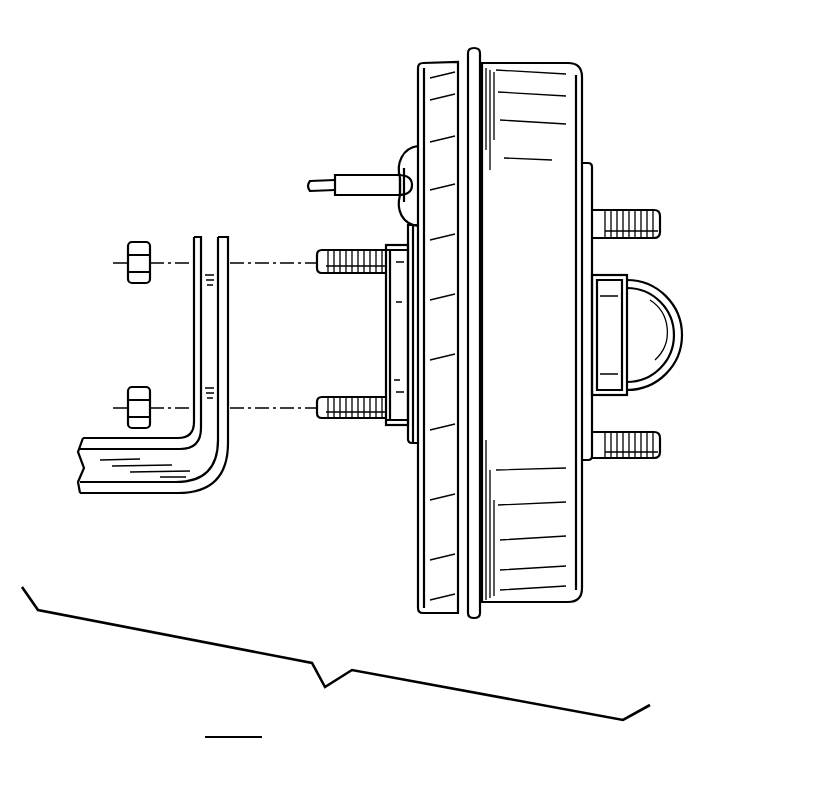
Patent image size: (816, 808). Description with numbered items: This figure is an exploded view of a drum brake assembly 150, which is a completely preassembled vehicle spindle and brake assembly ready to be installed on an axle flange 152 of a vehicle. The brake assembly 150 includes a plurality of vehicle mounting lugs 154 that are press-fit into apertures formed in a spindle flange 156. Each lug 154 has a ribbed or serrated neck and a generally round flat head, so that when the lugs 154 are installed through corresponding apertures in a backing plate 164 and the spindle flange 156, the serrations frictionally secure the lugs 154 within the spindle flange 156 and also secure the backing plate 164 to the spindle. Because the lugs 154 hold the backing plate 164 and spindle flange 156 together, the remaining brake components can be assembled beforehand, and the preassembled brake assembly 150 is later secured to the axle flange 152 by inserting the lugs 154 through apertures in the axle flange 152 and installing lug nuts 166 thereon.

The drum brake assembly 150 is at (349, 98).
The axle flange 152 is at (208, 237).
The vehicle mounting lugs 154 is at (352, 276).
The spindle flange 156 is at (397, 428).
The backing plate 164 is at (432, 578).
The lug nuts 166 is at (146, 241).